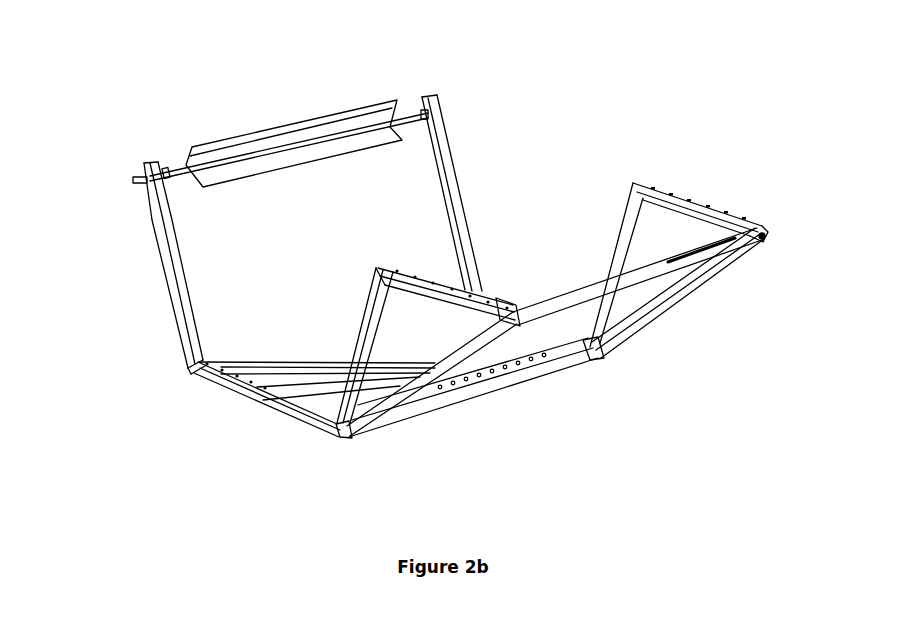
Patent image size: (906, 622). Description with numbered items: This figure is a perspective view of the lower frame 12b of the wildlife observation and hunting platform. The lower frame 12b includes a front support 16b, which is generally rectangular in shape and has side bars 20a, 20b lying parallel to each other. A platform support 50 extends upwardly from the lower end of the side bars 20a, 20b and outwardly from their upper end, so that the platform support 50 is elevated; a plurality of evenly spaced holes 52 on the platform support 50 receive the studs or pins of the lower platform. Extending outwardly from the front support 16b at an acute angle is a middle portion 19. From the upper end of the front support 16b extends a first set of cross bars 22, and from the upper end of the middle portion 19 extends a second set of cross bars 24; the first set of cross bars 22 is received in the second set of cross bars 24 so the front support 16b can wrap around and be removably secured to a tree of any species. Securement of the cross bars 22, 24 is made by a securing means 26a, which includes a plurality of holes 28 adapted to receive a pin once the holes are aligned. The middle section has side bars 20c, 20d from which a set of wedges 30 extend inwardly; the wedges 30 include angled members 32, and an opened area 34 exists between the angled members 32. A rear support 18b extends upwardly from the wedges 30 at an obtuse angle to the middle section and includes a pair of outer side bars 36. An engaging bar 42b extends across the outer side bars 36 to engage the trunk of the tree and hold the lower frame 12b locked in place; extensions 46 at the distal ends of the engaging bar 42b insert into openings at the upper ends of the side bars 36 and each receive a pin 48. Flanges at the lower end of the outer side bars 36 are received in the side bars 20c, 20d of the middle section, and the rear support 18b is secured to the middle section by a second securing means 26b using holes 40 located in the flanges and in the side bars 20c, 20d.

The lower frame 12b is at (742, 38).
The front support 16b is at (818, 193).
The rear support 18b is at (107, 302).
The middle portion 19 is at (296, 400).
The side bar 20a is at (710, 265).
The side bar 20b is at (427, 382).
The side bar 20c is at (590, 358).
The side bar 20d is at (327, 425).
The first set of cross bars 22 is at (767, 238).
The second set of cross bars 24 is at (557, 291).
The securing means 26a is at (683, 246).
The second securing means 26b is at (204, 360).
The holes 28 is at (550, 358).
The wedges 30 is at (302, 373).
The angled members 32 is at (291, 366).
The opened area 34 is at (418, 338).
The outer side bars 36 is at (449, 154).
The holes 40 is at (498, 291).
The engaging bar 42b is at (288, 130).
The extensions 46 is at (168, 169).
The pin 48 is at (140, 179).
The platform support 50 is at (386, 266).
The holes 52 is at (413, 277).